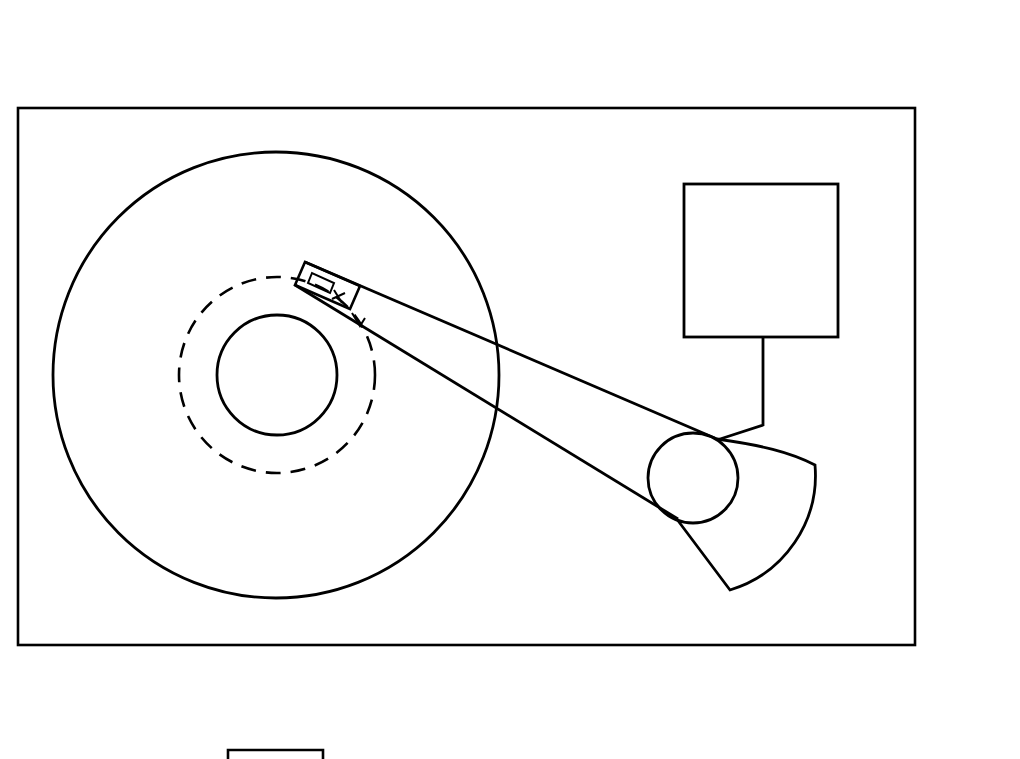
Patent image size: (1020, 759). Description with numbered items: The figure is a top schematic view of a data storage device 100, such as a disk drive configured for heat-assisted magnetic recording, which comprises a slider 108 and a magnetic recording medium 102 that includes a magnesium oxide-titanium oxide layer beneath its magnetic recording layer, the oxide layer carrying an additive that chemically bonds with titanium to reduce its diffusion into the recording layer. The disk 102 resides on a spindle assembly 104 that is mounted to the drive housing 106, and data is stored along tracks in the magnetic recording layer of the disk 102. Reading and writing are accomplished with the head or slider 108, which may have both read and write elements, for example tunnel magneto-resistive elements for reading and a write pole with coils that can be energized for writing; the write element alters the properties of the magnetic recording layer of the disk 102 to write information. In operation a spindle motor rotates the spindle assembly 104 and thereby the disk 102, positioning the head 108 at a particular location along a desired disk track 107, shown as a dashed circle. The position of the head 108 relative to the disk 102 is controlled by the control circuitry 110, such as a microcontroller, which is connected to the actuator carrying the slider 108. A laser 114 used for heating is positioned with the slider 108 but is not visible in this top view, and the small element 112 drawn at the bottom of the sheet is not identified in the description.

The data storage device 100 is at (180, 74).
The magnetic recording medium 102 is at (432, 212).
The spindle assembly 104 is at (277, 375).
The drive housing 106 is at (565, 108).
The disk track 107 is at (222, 294).
The slider 108 is at (329, 275).
The control circuitry 110 is at (761, 260).
The heater element 112 is at (292, 750).
The laser 114 is at (242, 722).